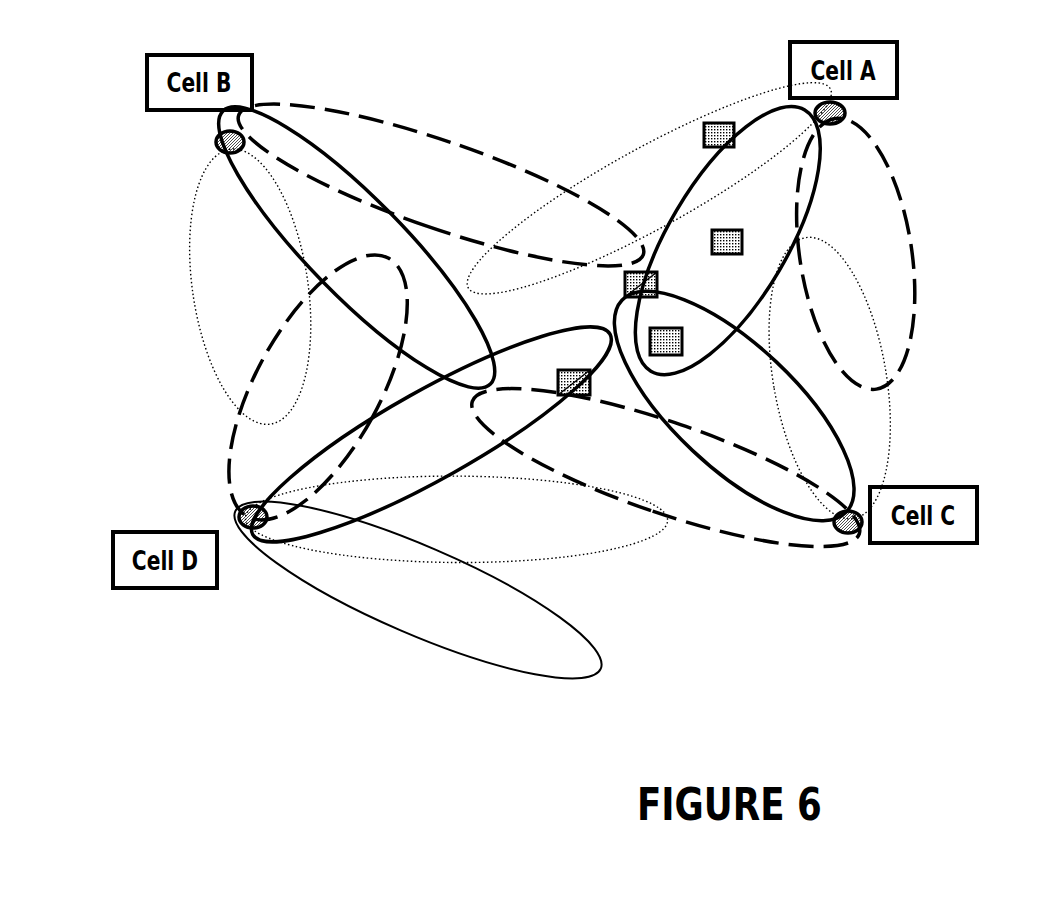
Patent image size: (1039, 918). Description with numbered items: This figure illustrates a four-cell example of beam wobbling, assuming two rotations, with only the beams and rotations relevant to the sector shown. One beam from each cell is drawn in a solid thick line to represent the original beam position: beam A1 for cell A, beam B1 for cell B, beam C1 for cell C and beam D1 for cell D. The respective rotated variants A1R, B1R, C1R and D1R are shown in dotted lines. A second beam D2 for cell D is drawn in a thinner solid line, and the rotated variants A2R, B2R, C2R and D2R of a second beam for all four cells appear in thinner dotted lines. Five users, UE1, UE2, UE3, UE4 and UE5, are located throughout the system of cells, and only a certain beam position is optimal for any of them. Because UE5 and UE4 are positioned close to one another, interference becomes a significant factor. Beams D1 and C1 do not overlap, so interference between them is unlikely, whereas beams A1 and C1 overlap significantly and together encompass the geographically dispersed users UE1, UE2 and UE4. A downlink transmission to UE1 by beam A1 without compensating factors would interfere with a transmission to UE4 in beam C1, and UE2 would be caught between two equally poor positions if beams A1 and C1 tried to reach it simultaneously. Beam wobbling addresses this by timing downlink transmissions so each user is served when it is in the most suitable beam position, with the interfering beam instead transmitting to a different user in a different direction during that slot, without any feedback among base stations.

The beam B1 is at (252, 198).
The rotated variant B1R is at (465, 145).
The rotated variant B2R is at (193, 296).
The beam A1 is at (810, 203).
The rotated variant A2R is at (615, 158).
The rotated variant A1R is at (923, 273).
The beam C1 is at (760, 357).
The rotated variant C2R is at (897, 410).
The rotated variant C1R is at (782, 537).
The beam D1 is at (457, 390).
The rotated variant D1R is at (235, 427).
The second beam D2 is at (445, 636).
The rotated variant D2R is at (643, 538).
The user equipment UE1 is at (736, 224).
The user equipment UE2 is at (606, 293).
The user equipment UE3 is at (703, 117).
The user equipment UE4 is at (679, 365).
The user equipment UE5 is at (550, 371).